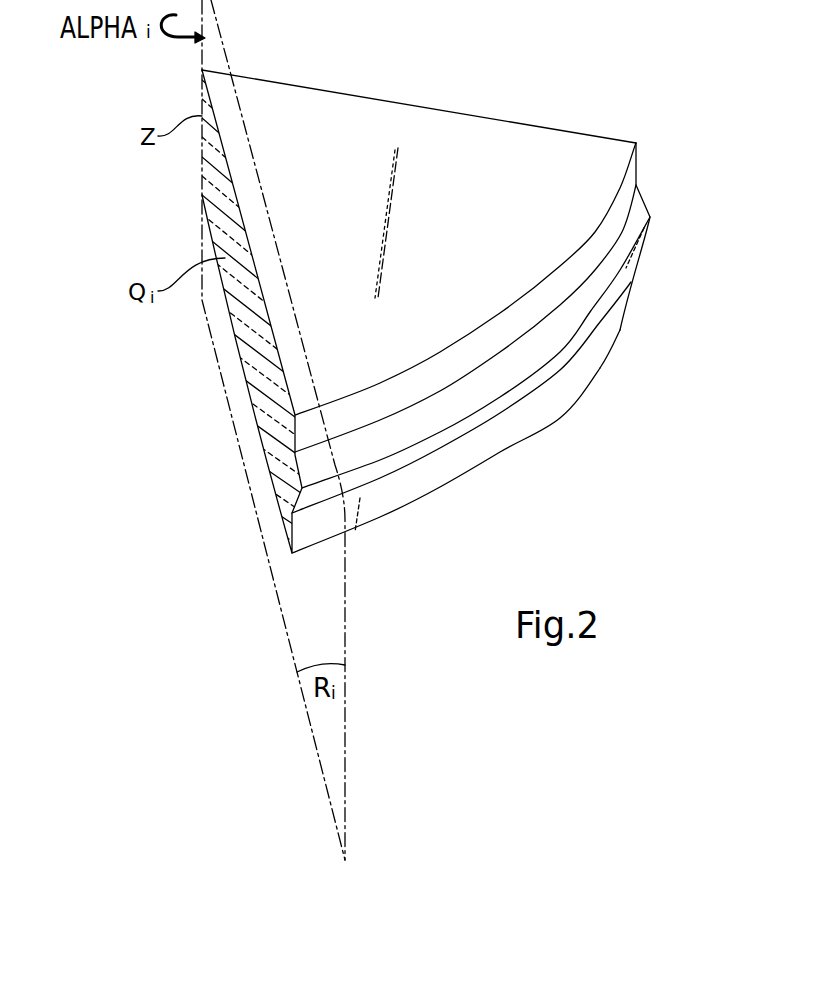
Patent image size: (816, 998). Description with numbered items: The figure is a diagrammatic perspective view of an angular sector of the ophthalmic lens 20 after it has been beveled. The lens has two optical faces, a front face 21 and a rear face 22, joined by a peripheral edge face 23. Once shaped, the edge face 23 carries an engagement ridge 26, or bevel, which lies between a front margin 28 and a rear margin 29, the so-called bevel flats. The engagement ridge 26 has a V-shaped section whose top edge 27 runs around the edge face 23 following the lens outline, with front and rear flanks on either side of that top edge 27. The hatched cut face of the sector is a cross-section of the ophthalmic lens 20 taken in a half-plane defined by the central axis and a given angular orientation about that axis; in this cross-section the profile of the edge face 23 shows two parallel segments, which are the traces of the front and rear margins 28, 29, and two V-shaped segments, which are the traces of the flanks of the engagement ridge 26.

The ophthalmic lens 20 is at (651, 150).
The front face 21 is at (455, 114).
The rear face 22 is at (356, 532).
The edge face 23 is at (432, 480).
The engagement ridge 26 is at (602, 323).
The top edge 27 is at (545, 367).
The front margin 28 is at (384, 390).
The rear margin 29 is at (572, 320).